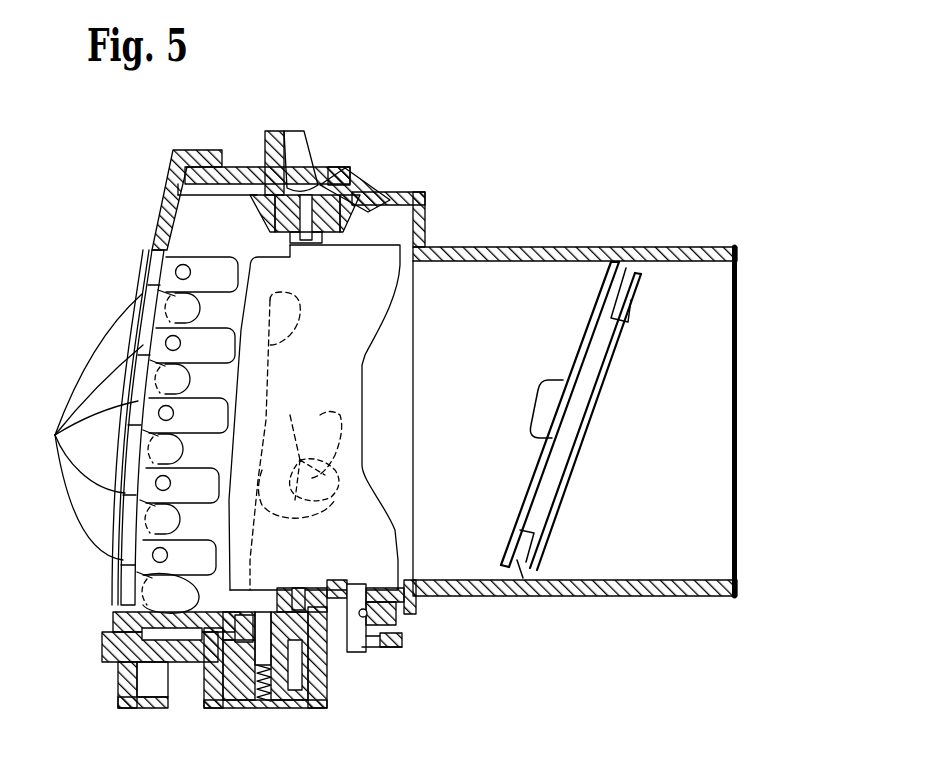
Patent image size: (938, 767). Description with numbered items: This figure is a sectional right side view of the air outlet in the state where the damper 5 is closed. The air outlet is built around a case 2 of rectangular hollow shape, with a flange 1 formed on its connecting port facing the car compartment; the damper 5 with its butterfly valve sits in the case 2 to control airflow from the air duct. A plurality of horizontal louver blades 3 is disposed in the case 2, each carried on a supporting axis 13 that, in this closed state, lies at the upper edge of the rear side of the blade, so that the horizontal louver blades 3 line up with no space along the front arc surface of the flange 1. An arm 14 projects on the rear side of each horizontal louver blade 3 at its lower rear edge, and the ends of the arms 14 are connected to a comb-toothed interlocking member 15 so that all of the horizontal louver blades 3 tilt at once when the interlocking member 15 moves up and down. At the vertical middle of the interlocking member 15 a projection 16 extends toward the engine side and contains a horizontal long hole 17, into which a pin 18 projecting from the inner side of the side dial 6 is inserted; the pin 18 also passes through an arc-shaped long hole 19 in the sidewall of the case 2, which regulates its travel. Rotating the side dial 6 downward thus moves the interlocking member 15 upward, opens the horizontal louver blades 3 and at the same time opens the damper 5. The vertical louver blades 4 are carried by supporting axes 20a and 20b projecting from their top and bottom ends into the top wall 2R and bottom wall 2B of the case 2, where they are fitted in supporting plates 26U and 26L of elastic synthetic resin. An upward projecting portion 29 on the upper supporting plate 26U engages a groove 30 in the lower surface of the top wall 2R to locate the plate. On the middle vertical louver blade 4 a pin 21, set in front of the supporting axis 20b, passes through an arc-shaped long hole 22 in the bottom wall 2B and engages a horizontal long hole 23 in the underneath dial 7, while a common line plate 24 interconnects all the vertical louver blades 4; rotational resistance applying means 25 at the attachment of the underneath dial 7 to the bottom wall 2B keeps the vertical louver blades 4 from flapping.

The flange 1 is at (166, 184).
The case 2 is at (480, 250).
The bottom wall 2B is at (245, 601).
The top wall 2R is at (343, 188).
The horizontal louver blades 3 is at (81, 427).
The vertical louver blades 4 is at (400, 294).
The damper 5 is at (590, 398).
The side dial 6 is at (112, 442).
The underneath dial 7 is at (102, 650).
The supporting axis 13 is at (188, 266).
The arm 14 is at (201, 296).
The interlocking member 15 is at (290, 340).
The projection 16 is at (340, 474).
The long hole 17 is at (340, 498).
The pin 18 is at (302, 437).
The long hole 19 is at (340, 428).
The supporting axis 20a is at (278, 210).
The supporting axis 20b is at (266, 598).
The pin 21 is at (362, 655).
The long hole 22 is at (370, 622).
The long hole 23 is at (385, 648).
The line plate 24 is at (364, 585).
The rotational resistance applying means 25 is at (312, 684).
The lower supporting plate 26L is at (234, 708).
The upper supporting plate 26U is at (366, 200).
The projecting portion 29 is at (322, 195).
The groove 30 is at (306, 178).